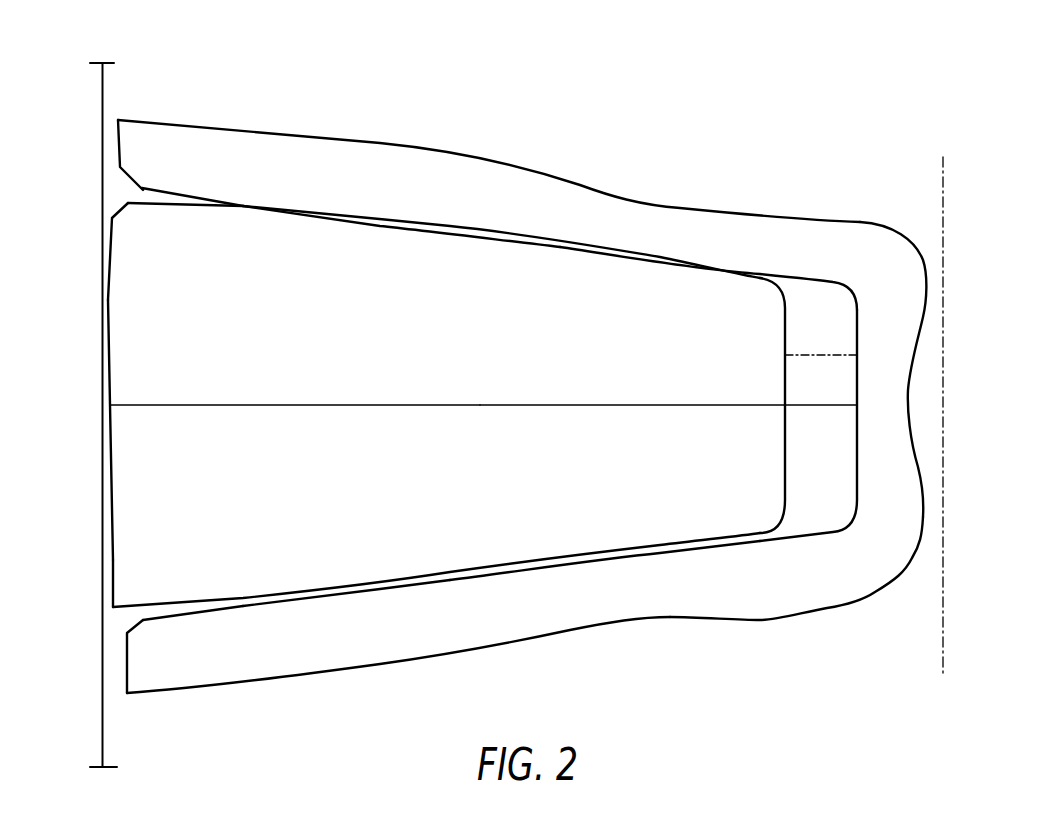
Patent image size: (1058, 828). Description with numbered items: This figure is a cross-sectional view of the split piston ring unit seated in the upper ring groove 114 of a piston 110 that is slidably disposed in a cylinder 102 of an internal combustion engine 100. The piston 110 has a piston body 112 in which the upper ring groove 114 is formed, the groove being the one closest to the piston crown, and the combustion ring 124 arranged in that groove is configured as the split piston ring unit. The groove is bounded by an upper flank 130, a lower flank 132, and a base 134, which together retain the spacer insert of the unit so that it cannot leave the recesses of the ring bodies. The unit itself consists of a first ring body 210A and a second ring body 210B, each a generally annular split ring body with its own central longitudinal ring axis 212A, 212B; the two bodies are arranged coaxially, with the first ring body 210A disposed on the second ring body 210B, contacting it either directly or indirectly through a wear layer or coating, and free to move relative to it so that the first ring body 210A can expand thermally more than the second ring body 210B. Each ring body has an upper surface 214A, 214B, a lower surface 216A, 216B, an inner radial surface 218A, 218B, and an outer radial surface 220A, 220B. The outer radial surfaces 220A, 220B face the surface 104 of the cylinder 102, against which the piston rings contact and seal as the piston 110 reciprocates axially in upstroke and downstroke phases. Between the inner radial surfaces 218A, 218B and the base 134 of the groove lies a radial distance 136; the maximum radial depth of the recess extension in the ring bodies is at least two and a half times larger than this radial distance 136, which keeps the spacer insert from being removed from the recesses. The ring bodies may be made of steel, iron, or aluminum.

The internal combustion engine 100 is at (665, 80).
The piston 110 is at (893, 369).
The cylinder 102 is at (84, 362).
The surface of the cylinder 104 is at (105, 83).
The piston body 112 is at (533, 620).
The upper ring groove 114 is at (130, 618).
The combustion ring 124 is at (133, 452).
The upper flank 130 is at (168, 188).
The lower flank 132 is at (190, 618).
The base of the ring groove 134 is at (860, 478).
The radial distance 136 is at (823, 353).
The first ring body 210A is at (381, 323).
The second ring body 210B is at (378, 495).
The central longitudinal ring axis 212A is at (943, 183).
The central longitudinal ring axis 212B is at (796, 568).
The upper surface 214A is at (435, 233).
The upper surface 214B is at (587, 405).
The lower surface 216A is at (640, 405).
The lower surface 216B is at (412, 585).
The inner radial surface 218A is at (787, 325).
The inner radial surface 218B is at (787, 477).
The outer radial surface 220A is at (108, 257).
The outer radial surface 220B is at (112, 590).